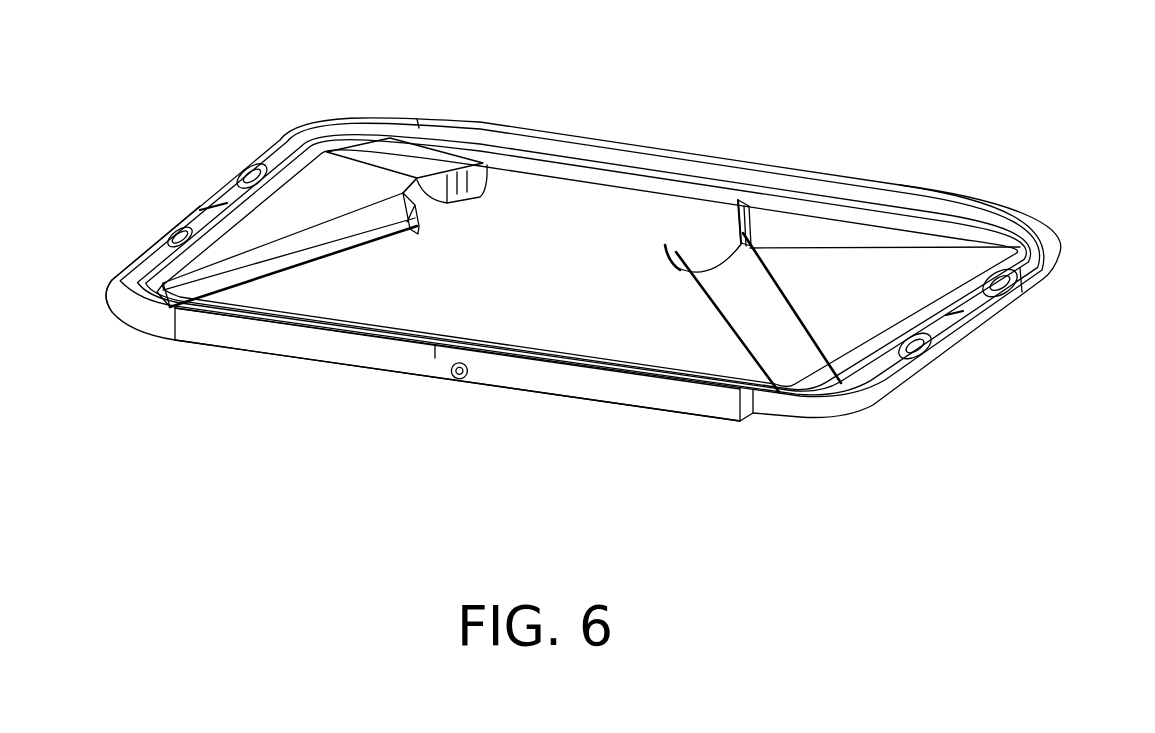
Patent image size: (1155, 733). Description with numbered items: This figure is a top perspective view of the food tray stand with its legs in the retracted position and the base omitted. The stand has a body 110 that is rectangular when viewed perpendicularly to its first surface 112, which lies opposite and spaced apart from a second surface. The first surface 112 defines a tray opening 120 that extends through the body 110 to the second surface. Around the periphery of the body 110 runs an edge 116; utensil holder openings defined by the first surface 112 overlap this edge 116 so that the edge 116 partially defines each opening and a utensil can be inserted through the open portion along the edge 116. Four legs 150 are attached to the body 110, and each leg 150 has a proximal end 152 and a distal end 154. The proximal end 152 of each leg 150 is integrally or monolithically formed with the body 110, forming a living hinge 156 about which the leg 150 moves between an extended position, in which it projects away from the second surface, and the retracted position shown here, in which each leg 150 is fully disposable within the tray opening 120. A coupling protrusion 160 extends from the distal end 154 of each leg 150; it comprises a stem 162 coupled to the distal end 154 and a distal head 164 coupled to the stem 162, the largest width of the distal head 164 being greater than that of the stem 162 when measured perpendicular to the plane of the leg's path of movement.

The body 110 is at (550, 382).
The first surface 112 is at (133, 270).
The edge 116 is at (648, 397).
The tray opening 120 is at (493, 312).
The legs 150 is at (385, 150).
The proximal end 152 is at (327, 153).
The distal end 154 is at (427, 203).
The living hinge 156 is at (350, 152).
The coupling protrusion 160 is at (460, 187).
The stem 162 is at (748, 228).
The distal head 164 is at (740, 233).